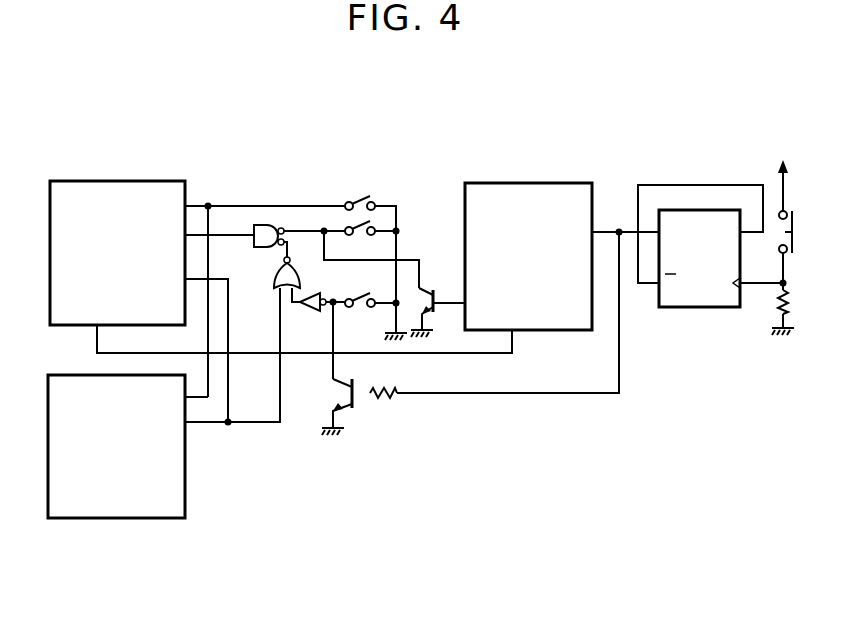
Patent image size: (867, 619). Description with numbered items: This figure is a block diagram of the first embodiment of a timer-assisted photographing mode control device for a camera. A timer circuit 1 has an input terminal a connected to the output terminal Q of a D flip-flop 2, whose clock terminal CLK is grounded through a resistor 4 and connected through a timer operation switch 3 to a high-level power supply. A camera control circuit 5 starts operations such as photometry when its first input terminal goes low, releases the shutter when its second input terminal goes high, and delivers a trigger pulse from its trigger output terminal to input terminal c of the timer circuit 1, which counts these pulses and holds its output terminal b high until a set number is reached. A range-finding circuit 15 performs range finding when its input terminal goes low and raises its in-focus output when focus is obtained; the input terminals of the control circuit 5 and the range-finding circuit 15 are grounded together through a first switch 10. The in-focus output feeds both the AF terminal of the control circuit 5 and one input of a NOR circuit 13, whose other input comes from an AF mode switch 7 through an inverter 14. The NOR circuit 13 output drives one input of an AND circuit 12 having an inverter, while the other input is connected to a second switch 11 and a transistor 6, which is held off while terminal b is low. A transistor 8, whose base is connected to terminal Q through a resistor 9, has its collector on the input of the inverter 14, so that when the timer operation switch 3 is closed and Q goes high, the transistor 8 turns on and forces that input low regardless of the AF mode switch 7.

The timer circuit 1 is at (517, 190).
The D flip-flop 2 is at (690, 210).
The timer operation switch 3 is at (794, 232).
The resistor 4 is at (793, 302).
The camera control circuit 5 is at (112, 190).
The transistor 6 is at (433, 310).
The AF mode switch 7 is at (360, 289).
The transistor 8 is at (358, 383).
The resistor 9 is at (380, 398).
The first switch 10 is at (357, 192).
The second switch 11 is at (360, 241).
The AND circuit 12 is at (266, 226).
The NOR circuit 13 is at (283, 279).
The inverter 14 is at (316, 292).
The range-finding circuit 15 is at (121, 512).